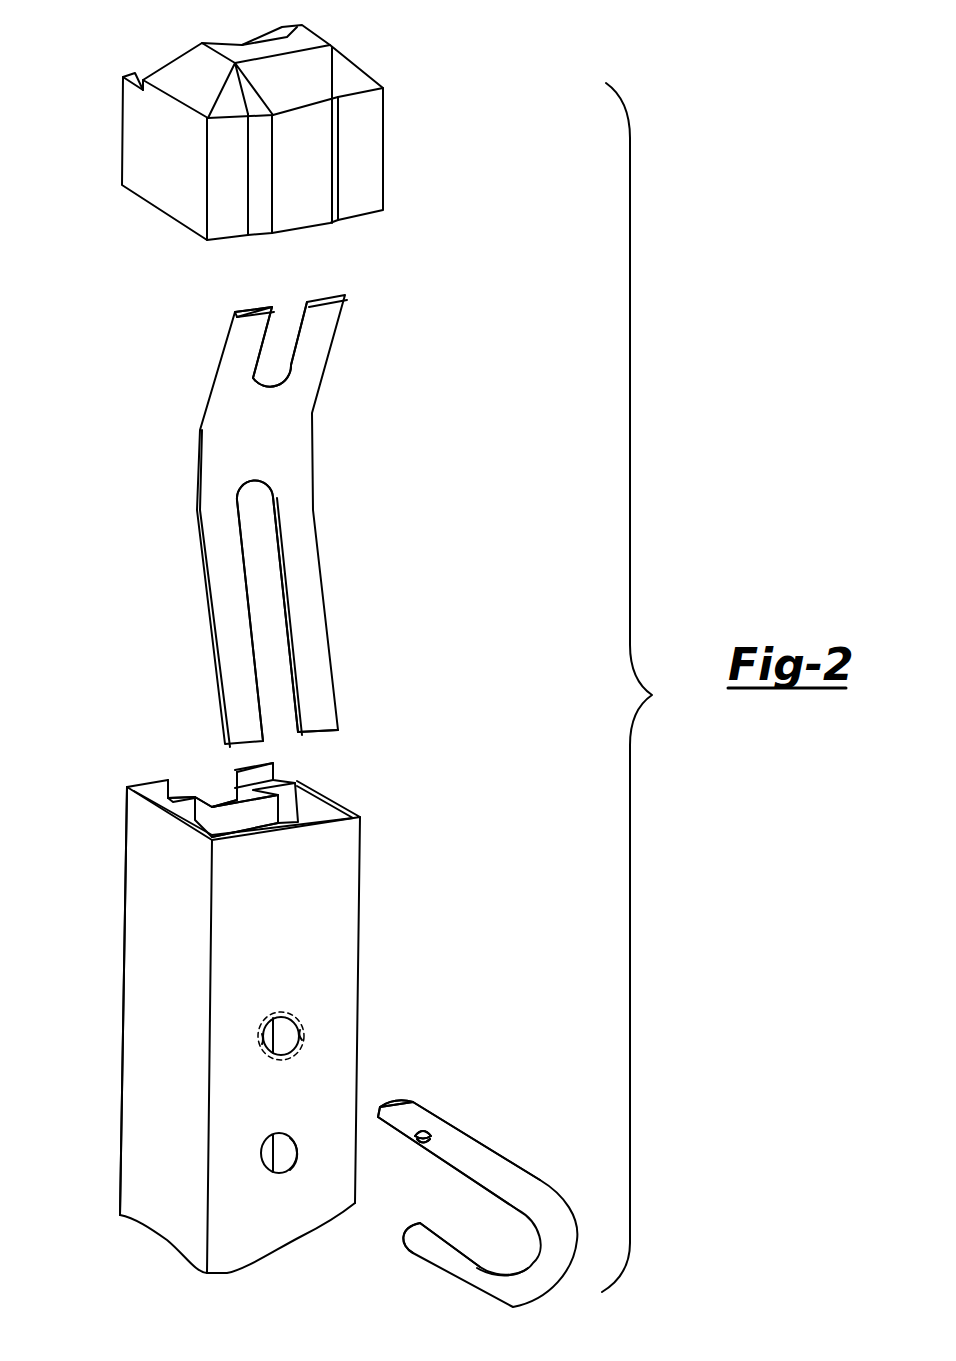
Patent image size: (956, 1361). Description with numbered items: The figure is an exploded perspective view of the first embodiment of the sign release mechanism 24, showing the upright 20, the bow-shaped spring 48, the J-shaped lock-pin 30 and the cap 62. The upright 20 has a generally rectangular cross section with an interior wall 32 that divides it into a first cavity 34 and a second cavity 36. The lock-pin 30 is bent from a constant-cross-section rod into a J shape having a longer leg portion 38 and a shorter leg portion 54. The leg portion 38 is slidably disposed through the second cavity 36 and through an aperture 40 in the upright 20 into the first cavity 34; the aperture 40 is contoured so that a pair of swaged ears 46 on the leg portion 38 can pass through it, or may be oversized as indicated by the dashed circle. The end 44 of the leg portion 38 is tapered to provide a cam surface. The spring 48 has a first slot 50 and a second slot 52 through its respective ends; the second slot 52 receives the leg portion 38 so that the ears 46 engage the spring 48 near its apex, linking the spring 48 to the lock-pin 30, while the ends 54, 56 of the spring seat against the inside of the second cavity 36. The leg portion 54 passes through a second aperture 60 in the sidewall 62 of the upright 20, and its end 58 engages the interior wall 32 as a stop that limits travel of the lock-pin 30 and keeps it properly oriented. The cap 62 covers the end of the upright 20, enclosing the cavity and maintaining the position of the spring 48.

The upright 20 is at (347, 892).
The sign release mechanism 24 is at (90, 793).
The lock-pin 30 is at (517, 1143).
The interior wall 32 is at (185, 810).
The first cavity 34 is at (207, 782).
The second cavity 36 is at (245, 820).
The leg portion 38 is at (452, 1135).
The aperture 40 is at (290, 1018).
The end 44 is at (392, 1107).
The ears 46 is at (418, 1140).
The spring 48 is at (292, 432).
The first slot 50 is at (293, 330).
The second slot 52 is at (272, 552).
The leg portion 54 is at (250, 312).
The end 56 is at (320, 733).
The end 58 is at (398, 1230).
The second aperture 60 is at (285, 1142).
The cap 62 is at (222, 42).